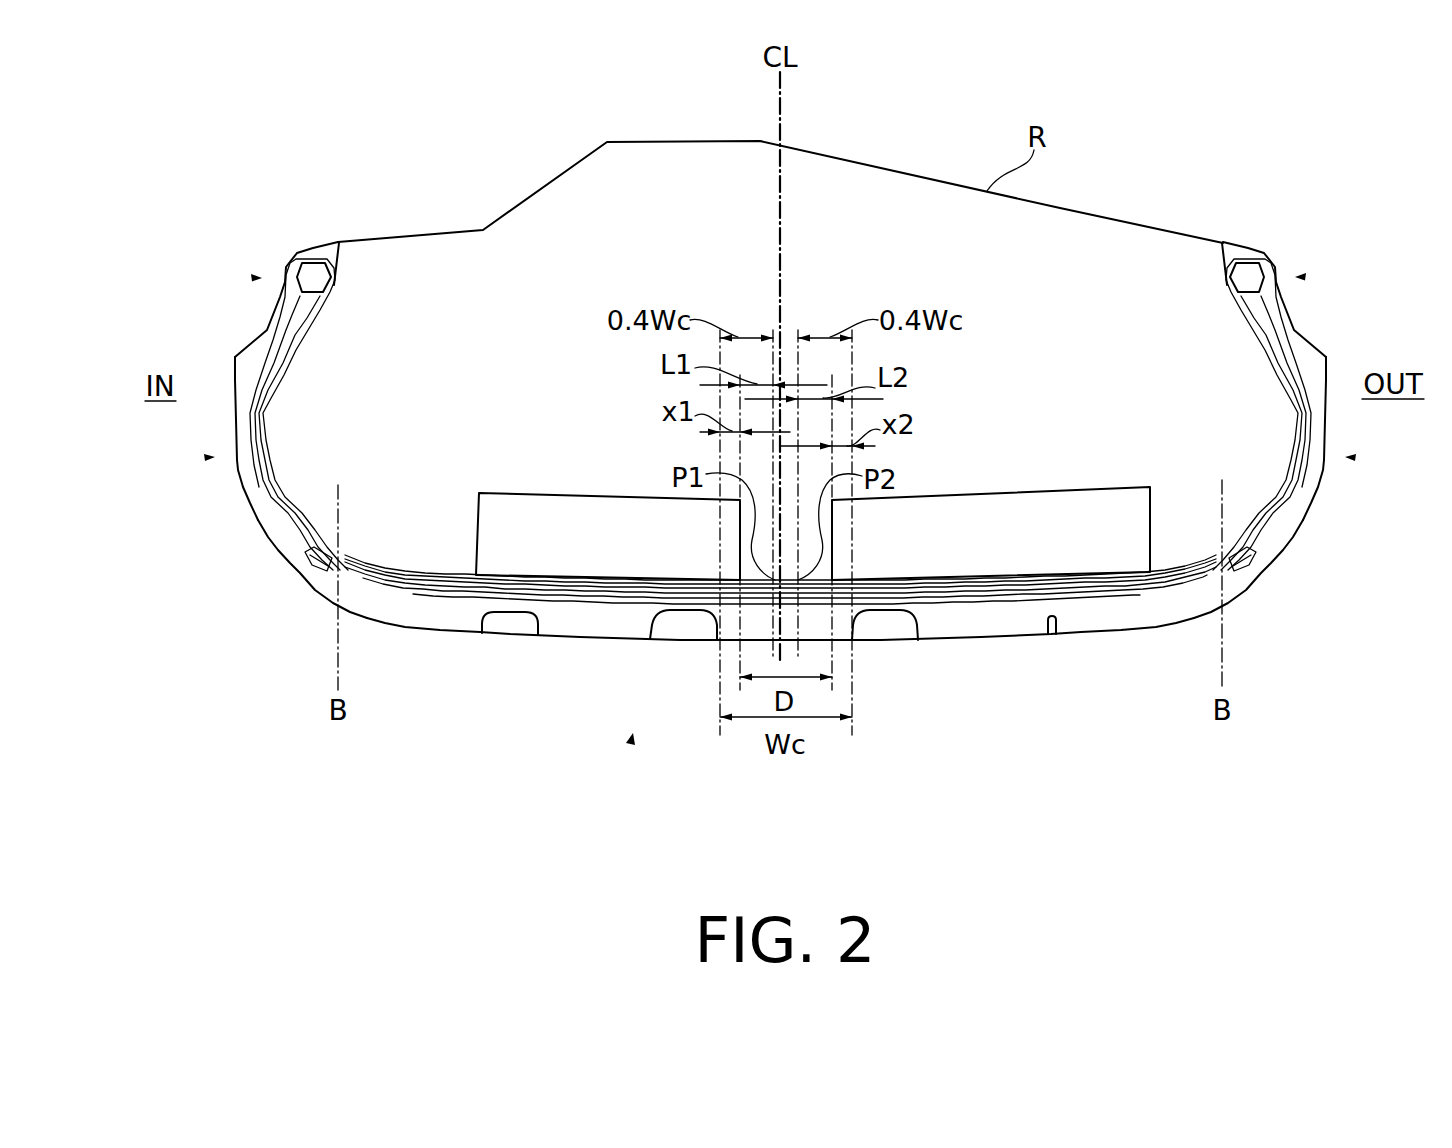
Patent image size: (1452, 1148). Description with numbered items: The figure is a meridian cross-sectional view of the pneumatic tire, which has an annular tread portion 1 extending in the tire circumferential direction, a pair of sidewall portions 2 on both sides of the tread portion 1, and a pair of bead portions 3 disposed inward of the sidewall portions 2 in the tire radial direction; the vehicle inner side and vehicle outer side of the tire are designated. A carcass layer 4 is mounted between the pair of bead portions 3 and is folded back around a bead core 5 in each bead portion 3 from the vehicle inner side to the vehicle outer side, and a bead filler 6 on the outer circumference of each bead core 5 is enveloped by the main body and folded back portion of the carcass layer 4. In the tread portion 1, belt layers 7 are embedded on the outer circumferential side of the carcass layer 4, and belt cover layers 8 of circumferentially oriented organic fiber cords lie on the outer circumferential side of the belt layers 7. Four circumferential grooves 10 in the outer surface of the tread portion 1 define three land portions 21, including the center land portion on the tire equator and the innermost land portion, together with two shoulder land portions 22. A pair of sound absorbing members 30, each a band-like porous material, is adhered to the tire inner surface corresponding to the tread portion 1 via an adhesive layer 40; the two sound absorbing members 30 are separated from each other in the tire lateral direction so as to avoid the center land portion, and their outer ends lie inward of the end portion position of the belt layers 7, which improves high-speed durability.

The tread portion 1 is at (633, 735).
The sidewall portion 2 is at (213, 457).
The bead portion 3 is at (260, 278).
The carcass layer 4 is at (263, 458).
The bead core 5 is at (318, 273).
The bead filler 6 is at (297, 322).
The belt layer 7 is at (1003, 598).
The belt cover layer 8 is at (1130, 592).
The circumferential groove 10 is at (510, 627).
The land portion 21 is at (573, 640).
The shoulder land portion 22 is at (410, 623).
The sound absorbing member 30 is at (568, 520).
The adhesive layer 40 is at (334, 553).